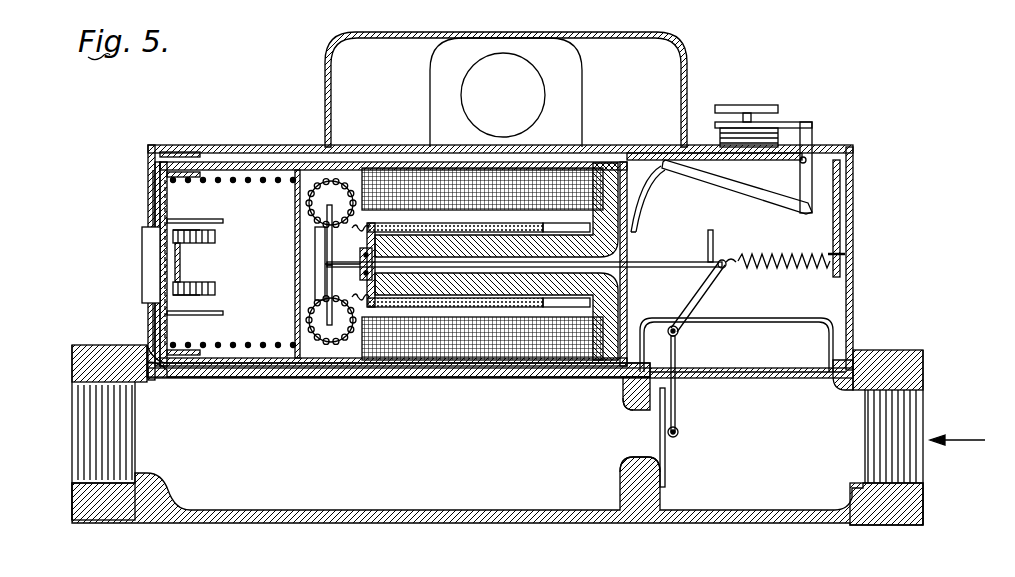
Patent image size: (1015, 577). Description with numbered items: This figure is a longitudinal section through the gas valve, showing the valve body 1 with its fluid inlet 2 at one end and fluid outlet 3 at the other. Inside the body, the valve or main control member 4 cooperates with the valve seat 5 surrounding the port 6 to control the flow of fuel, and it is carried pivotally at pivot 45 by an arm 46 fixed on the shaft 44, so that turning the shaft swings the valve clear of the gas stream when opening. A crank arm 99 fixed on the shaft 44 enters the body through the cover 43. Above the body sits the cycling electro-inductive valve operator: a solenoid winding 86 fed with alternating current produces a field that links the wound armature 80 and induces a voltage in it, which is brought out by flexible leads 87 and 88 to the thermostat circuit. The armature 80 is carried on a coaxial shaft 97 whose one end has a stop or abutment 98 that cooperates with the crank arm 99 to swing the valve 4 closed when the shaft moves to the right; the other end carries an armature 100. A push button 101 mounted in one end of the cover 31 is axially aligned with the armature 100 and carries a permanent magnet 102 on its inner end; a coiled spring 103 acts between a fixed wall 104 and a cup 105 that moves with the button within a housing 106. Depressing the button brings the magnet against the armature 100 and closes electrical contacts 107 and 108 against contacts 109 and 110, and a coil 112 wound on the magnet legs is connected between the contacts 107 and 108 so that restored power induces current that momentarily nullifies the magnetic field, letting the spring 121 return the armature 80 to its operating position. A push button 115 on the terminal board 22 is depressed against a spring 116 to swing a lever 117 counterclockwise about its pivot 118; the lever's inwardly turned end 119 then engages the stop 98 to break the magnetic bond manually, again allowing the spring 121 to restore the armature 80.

The valve body 1 is at (420, 520).
The fluid inlet 2 is at (915, 480).
The fluid outlet 3 is at (90, 405).
The valve or main control member 4 is at (666, 476).
The valve seat 5 is at (640, 460).
The port 6 is at (650, 434).
The terminal board 22 is at (283, 147).
The cover 31 is at (148, 173).
The cover 43 is at (772, 320).
The shaft 44 is at (679, 334).
The pivot 45 is at (679, 434).
The arm 46 is at (678, 402).
The wound armature 80 is at (545, 222).
The solenoid winding 86 is at (420, 180).
The flexible lead 87 is at (336, 178).
The flexible lead 88 is at (330, 345).
The shaft 97 is at (652, 266).
The stop or abutment 98 is at (713, 240).
The crank arm 99 is at (705, 292).
The armature 100 is at (315, 275).
The push button 101 is at (148, 245).
The permanent magnet 102 is at (165, 279).
The coiled spring 103 is at (210, 368).
The fixed wall 104 is at (297, 336).
The cup 105 is at (180, 178).
The housing 106 is at (222, 163).
The electrical contact 107 is at (203, 220).
The electrical contact 108 is at (190, 312).
The electrical contact 109 is at (327, 210).
The electrical contact 110 is at (327, 312).
The coil 112 is at (190, 255).
The push button 115 is at (756, 105).
The spring 116 is at (722, 130).
The lever 117 is at (716, 185).
The pivot 118 is at (808, 162).
The inwardly turned end 119 is at (638, 212).
The spring 121 is at (836, 272).